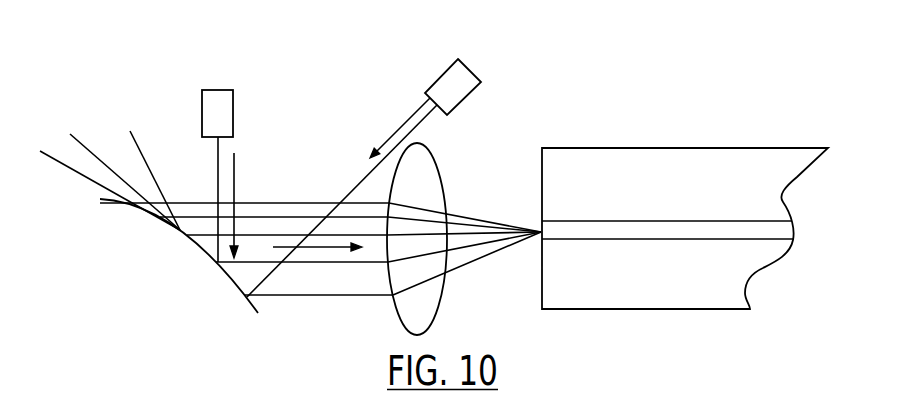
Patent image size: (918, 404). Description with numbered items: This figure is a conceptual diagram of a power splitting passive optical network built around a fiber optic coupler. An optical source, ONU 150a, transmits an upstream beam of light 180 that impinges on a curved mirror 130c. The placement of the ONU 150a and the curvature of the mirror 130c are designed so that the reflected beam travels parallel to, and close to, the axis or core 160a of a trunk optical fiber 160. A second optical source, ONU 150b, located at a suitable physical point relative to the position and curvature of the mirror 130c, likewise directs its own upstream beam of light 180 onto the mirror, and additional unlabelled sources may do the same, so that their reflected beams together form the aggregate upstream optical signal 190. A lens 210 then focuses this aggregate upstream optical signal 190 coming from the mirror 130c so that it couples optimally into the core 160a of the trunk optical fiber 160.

The curved mirror 130c is at (163, 223).
The ONU 150a is at (235, 115).
The ONU 150b is at (440, 76).
The upstream beam of light 180 is at (236, 186).
The aggregate upstream optical signal 190 is at (326, 251).
The lens 210 is at (447, 190).
The trunk optical fiber 160 is at (622, 147).
The core 160a is at (610, 228).